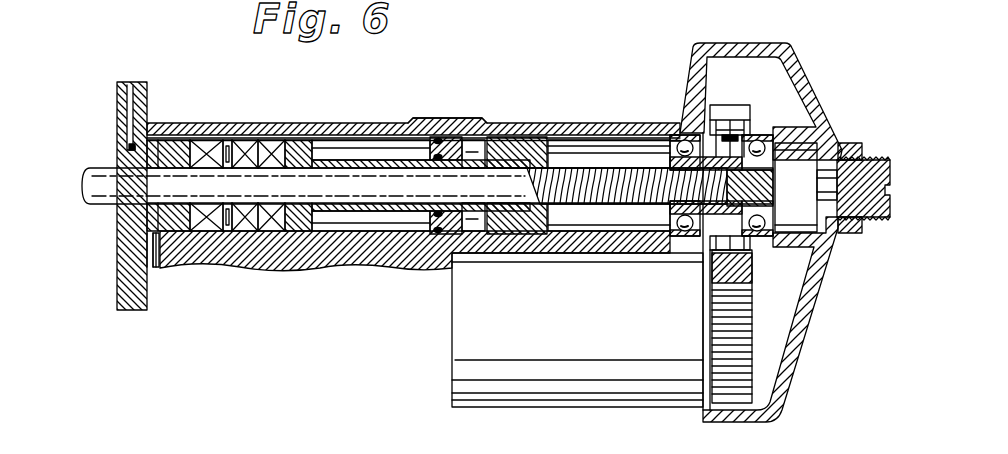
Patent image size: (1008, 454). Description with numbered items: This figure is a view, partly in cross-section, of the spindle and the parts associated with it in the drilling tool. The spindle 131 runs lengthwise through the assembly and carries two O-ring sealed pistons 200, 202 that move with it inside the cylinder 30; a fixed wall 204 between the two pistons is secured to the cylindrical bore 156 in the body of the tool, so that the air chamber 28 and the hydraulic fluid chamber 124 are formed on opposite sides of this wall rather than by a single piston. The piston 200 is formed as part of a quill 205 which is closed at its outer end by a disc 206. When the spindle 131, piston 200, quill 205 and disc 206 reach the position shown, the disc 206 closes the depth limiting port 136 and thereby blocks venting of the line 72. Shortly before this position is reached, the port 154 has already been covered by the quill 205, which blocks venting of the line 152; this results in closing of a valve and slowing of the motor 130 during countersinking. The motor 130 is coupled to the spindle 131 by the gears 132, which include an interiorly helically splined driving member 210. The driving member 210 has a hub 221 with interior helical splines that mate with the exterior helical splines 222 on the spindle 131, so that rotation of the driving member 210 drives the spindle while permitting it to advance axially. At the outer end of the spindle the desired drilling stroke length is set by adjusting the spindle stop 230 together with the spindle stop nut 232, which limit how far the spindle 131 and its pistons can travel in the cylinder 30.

The line 72 is at (133, 83).
The depth limiting port 136 is at (128, 147).
The cylindrical bore 156 is at (216, 124).
The piston 200 is at (322, 142).
The hydraulic fluid chamber 124 is at (381, 157).
The cylinder 30 is at (413, 119).
The piston 202 is at (530, 150).
The driving member 210 is at (740, 126).
The spindle stop nut 232 is at (850, 144).
The disc 206 is at (147, 222).
The port 154 is at (187, 268).
The line 152 is at (159, 278).
The quill 205 is at (268, 232).
The spindle 131 is at (380, 203).
The fixed wall 204 is at (431, 233).
The air chamber 28 is at (475, 232).
The motor 130 is at (612, 341).
The exterior helical splines 222 is at (657, 200).
The hub 221 is at (773, 172).
The spindle stop 230 is at (874, 218).
The gears 132 is at (748, 270).